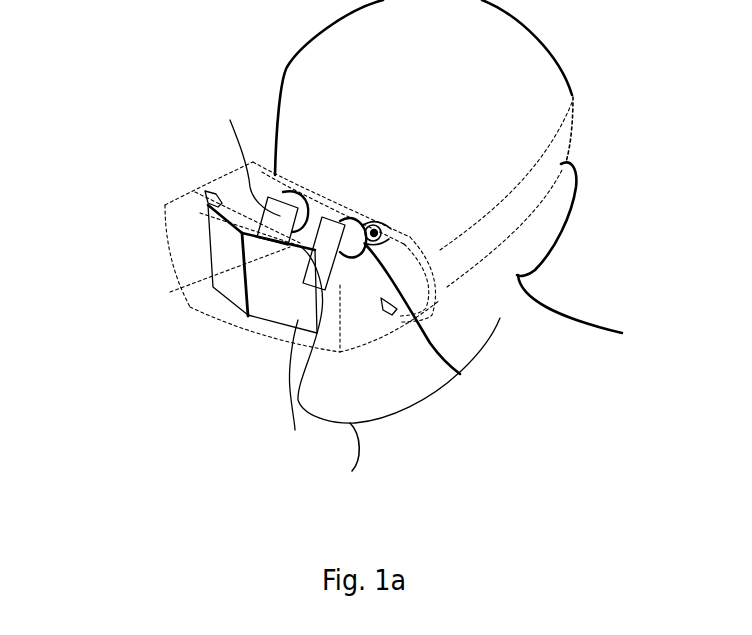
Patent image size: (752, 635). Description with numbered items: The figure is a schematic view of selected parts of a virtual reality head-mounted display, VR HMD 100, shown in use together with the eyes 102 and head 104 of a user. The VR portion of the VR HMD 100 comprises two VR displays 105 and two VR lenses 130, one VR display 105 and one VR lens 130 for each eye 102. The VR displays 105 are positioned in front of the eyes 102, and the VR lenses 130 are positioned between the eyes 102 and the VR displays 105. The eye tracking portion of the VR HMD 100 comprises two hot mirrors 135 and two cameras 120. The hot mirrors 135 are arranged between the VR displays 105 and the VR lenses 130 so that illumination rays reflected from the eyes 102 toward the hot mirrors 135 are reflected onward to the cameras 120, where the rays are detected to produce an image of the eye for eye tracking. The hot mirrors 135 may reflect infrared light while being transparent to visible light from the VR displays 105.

The VR HMD 100 is at (165, 213).
The eyes 102 is at (305, 202).
The head 104 is at (552, 50).
The VR displays 105 is at (232, 293).
The cameras 120 is at (212, 188).
The VR lenses 130 is at (313, 217).
The hot mirrors 135 is at (257, 275).